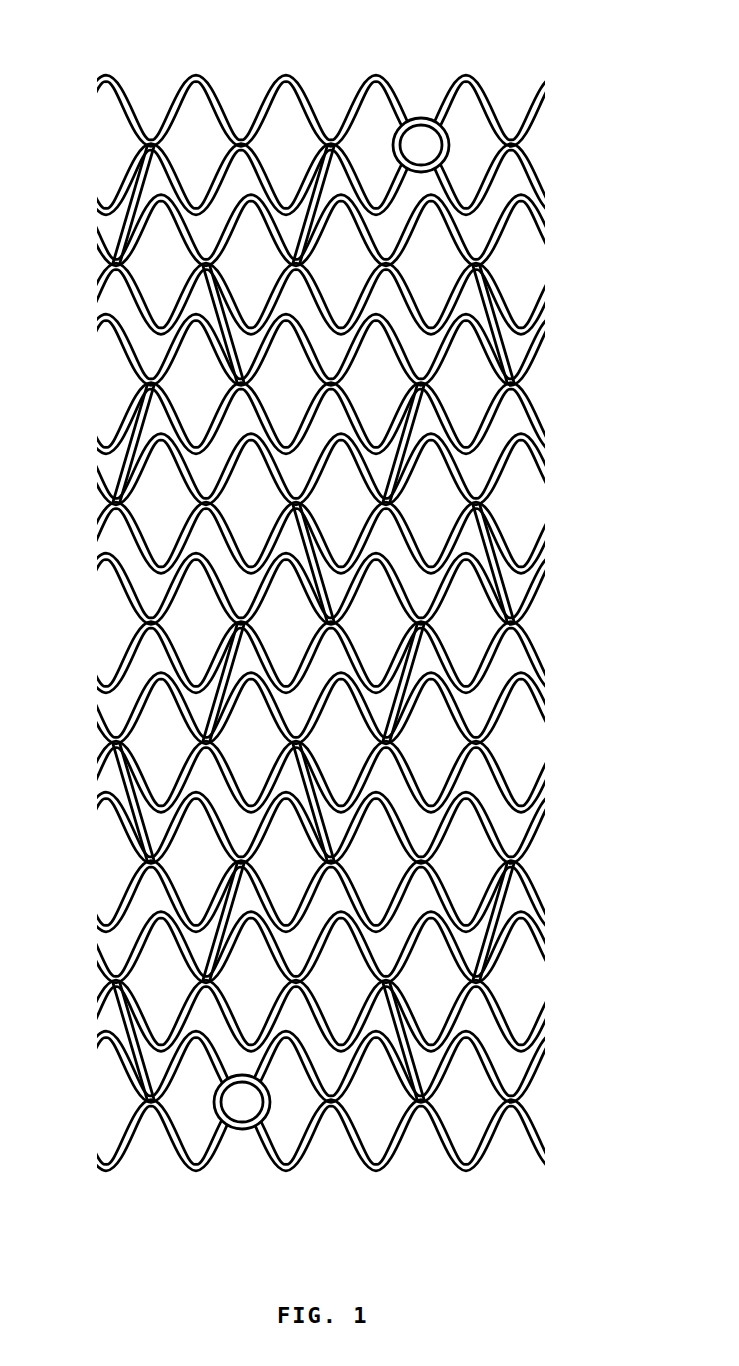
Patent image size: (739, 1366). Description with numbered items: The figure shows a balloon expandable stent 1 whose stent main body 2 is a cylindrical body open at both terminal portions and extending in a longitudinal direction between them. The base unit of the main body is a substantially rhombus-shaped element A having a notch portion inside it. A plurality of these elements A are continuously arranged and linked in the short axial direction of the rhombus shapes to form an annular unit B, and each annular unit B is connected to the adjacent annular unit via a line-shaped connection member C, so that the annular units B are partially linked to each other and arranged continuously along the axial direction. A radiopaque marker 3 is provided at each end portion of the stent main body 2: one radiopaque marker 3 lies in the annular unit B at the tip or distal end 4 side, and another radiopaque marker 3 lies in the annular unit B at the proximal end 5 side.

The stent 1 is at (106, 544).
The stent main body 2 is at (537, 409).
The radiopaque marker 3 is at (421, 132).
The tip (distal end) 4 is at (288, 1171).
The proximal end 5 is at (466, 76).
The substantially rhombus-shaped element A is at (441, 503).
The annular unit B is at (86, 793).
The line-shaped connection member C is at (408, 668).